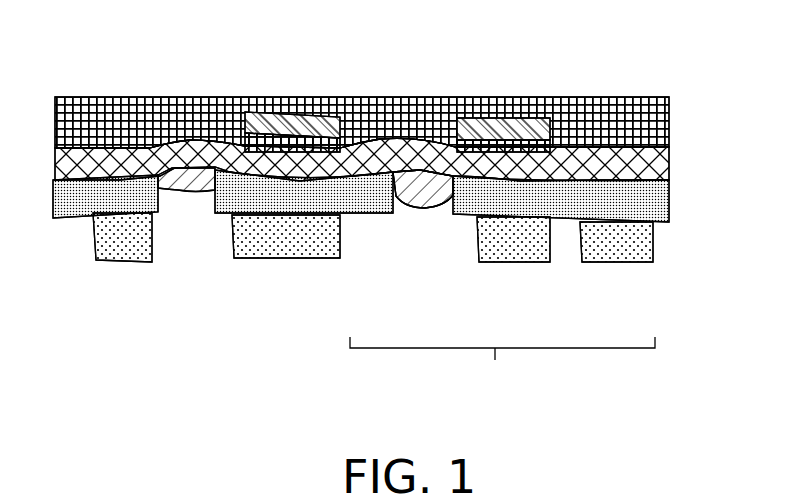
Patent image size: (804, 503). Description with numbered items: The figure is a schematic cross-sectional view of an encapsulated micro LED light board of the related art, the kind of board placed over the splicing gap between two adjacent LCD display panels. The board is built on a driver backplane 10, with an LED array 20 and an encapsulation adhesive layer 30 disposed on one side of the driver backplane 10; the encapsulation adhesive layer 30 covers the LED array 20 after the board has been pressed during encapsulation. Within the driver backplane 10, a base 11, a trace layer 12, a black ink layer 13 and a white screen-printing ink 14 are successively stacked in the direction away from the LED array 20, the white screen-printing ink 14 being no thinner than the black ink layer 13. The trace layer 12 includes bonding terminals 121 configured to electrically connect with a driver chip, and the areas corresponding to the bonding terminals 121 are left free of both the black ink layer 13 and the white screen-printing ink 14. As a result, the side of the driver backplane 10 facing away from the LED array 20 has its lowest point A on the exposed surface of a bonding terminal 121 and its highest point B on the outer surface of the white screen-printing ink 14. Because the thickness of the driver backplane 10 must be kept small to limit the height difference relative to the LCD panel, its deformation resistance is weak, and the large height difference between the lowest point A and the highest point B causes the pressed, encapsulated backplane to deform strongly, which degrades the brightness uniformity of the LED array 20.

The driver backplane 10 is at (502, 363).
The base 11 is at (618, 167).
The trace layer 12 is at (428, 193).
The bonding terminals 121 is at (423, 189).
The black ink layer 13 is at (567, 197).
The white screen-printing ink 14 is at (333, 237).
The LED array 20 is at (475, 128).
The encapsulation adhesive layer 30 is at (605, 123).
The lowest point A is at (183, 192).
The highest point B is at (293, 258).